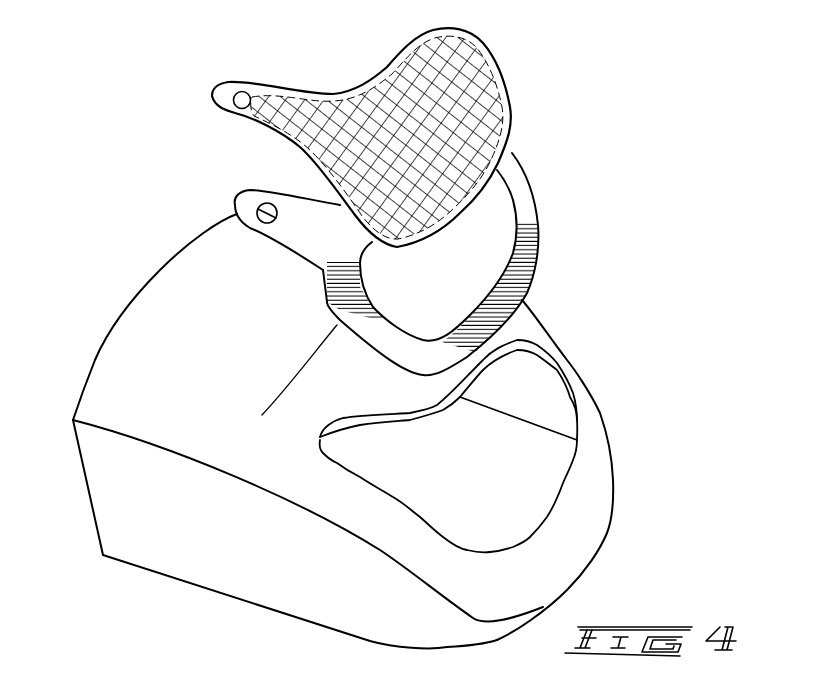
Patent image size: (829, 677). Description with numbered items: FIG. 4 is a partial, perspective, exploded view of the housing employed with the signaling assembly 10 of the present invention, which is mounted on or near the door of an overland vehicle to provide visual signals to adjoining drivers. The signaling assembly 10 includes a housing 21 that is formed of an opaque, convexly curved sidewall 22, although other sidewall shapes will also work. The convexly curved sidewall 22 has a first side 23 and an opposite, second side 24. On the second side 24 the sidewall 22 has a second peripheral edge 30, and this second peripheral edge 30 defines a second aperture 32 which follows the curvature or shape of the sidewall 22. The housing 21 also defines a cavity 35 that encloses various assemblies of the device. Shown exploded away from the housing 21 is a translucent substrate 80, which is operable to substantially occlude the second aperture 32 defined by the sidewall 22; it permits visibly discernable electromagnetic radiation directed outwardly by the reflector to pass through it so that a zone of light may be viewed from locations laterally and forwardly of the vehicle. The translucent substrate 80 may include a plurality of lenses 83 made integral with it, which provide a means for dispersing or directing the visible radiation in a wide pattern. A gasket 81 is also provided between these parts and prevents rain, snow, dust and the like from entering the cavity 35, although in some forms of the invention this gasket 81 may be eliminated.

The signaling assembly 10 is at (657, 197).
The housing 21 is at (157, 515).
The convexly curved sidewall 22 is at (151, 398).
The first side 23 is at (220, 590).
The second side 24 is at (270, 458).
The second peripheral edge 30 is at (573, 463).
The second aperture 32 is at (540, 437).
The cavity 35 is at (474, 477).
The translucent substrate 80 is at (500, 113).
The gasket 81 is at (513, 197).
The lenses 83 is at (440, 64).